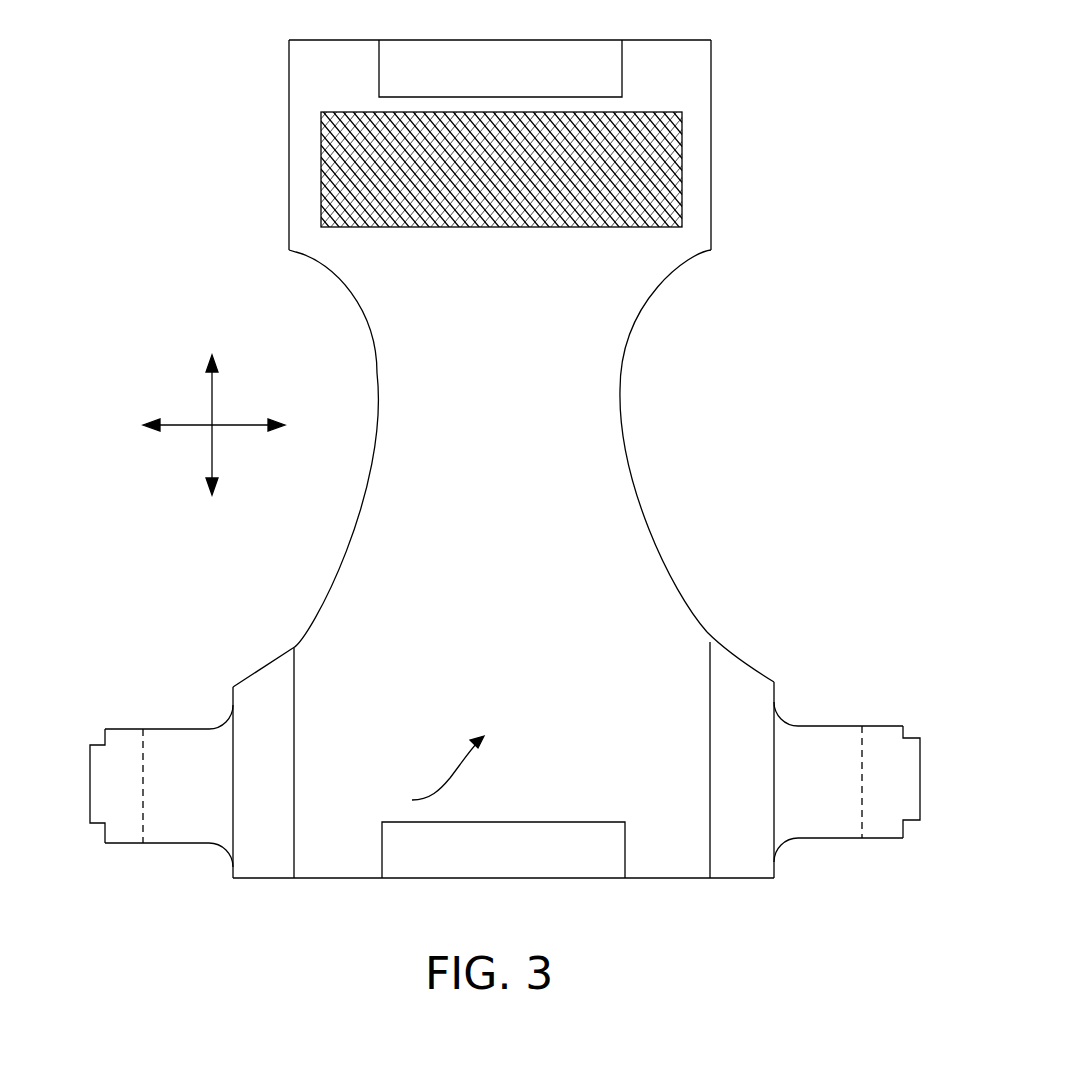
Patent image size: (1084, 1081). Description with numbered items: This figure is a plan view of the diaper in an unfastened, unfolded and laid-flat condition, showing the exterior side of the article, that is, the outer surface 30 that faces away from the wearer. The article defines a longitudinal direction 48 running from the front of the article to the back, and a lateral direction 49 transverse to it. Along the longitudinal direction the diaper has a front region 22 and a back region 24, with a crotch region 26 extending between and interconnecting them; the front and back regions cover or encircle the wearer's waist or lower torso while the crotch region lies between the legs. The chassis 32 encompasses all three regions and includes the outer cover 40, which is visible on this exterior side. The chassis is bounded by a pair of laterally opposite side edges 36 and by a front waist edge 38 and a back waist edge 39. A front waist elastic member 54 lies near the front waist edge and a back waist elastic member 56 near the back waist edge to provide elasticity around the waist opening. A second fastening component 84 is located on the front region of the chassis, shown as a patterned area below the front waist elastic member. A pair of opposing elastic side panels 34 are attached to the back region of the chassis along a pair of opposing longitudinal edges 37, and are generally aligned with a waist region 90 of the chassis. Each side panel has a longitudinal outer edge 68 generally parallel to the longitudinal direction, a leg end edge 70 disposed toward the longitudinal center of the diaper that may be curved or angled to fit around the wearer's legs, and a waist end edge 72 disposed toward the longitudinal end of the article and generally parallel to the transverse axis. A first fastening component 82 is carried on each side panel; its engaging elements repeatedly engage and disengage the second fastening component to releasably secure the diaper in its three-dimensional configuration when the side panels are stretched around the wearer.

The outer surface 30 is at (517, 496).
The front waist edge 38 is at (340, 40).
The front waist elastic member 54 is at (610, 74).
The second fastening component 84 is at (523, 228).
The chassis 32 is at (370, 543).
The side edge 36 is at (365, 478).
The outer cover 40 is at (328, 633).
The front region 22 is at (600, 290).
The crotch region 26 is at (605, 413).
The back region 24 is at (647, 580).
The elastic side panel 34 is at (676, 50).
The longitudinal edge 37 is at (294, 753).
The back waist edge 39 is at (370, 880).
The waist end edge 72 is at (723, 880).
The back waist elastic member 56 is at (466, 822).
The leg end edge 70 is at (268, 667).
The longitudinal outer edge 68 is at (233, 773).
The first fastening component 82 is at (122, 835).
The longitudinal direction 48 is at (215, 392).
The lateral direction 49 is at (228, 428).
The waist region 90 is at (432, 776).